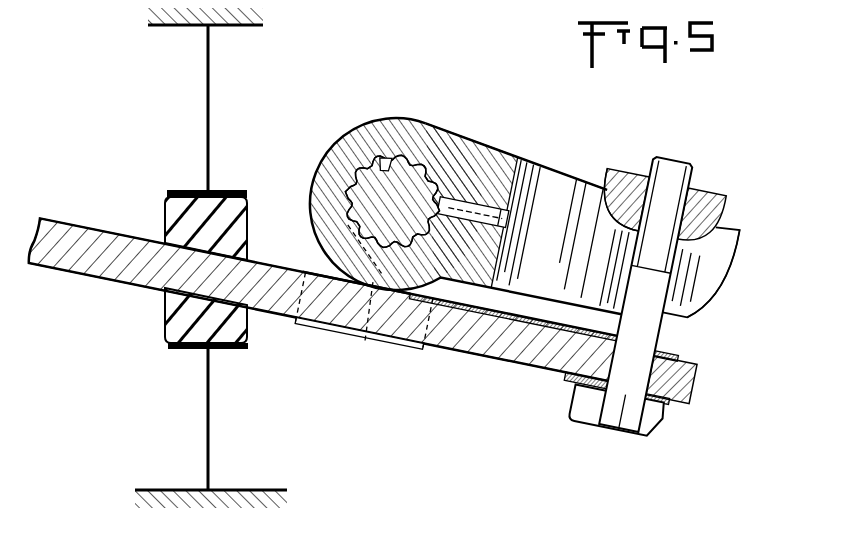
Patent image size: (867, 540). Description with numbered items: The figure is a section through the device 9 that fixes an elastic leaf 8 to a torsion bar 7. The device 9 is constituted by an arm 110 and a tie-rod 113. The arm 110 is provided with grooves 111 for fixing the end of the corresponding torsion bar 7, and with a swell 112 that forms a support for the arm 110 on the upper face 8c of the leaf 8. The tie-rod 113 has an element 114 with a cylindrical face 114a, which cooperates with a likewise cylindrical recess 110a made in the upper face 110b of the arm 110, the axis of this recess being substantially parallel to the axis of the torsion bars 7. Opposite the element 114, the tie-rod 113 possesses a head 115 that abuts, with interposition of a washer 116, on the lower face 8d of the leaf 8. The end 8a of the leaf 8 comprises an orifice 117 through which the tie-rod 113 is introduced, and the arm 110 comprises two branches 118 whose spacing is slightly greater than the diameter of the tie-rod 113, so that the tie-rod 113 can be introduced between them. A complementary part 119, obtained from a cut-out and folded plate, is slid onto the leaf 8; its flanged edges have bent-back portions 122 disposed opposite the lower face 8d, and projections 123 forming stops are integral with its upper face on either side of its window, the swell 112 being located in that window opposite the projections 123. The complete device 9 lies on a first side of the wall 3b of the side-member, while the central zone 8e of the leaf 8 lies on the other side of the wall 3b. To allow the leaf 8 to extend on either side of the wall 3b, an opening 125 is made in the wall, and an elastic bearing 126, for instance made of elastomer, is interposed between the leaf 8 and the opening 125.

The wall 3b is at (206, 85).
The torsion bar 7 is at (323, 180).
The leaf 8 is at (142, 218).
The end of the leaf 8a is at (443, 341).
The upper face of the leaf 8c is at (105, 225).
The lower face of the leaf 8d is at (91, 279).
The central zone of the leaf 8e is at (57, 230).
The device 9 is at (507, 141).
The arm 110 is at (470, 118).
The cylindrical recess 110a is at (618, 191).
The upper face of the arm 110b is at (732, 224).
The grooves 111 is at (386, 150).
The swell 112 is at (375, 291).
The tie-rod 113 is at (670, 165).
The element 114 is at (712, 188).
The cylindrical face 114a is at (611, 214).
The head 115 is at (572, 408).
The washer 116 is at (572, 377).
The orifice 117 is at (639, 370).
The branches 118 is at (565, 183).
The complementary part 119 is at (561, 328).
The bent-back portions 122 is at (329, 334).
The projections 123 is at (323, 222).
The opening 125 is at (193, 337).
The elastic bearing 126 is at (190, 200).